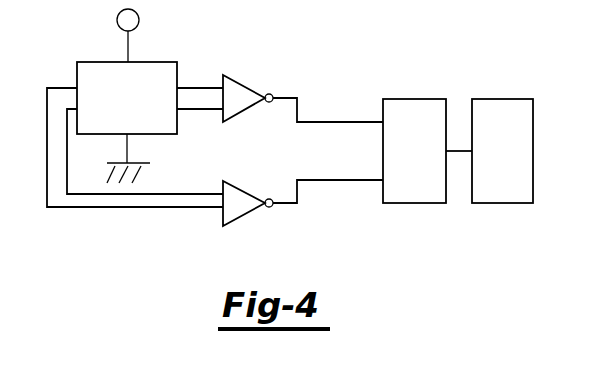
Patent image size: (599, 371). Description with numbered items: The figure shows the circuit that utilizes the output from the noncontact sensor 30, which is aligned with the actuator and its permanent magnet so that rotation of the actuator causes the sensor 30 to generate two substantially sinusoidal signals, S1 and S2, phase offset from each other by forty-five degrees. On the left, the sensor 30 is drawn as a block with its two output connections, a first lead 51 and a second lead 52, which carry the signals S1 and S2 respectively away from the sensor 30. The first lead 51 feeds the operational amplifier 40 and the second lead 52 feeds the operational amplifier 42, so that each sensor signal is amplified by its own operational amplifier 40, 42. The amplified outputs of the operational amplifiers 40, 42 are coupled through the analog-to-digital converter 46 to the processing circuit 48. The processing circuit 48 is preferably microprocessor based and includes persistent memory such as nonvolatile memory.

The noncontact sensor 30 is at (96, 62).
The first lead 51 is at (200, 88).
The second lead 52 is at (117, 207).
The operational amplifier 40 is at (240, 78).
The operational amplifier 42 is at (240, 217).
The analog-to-digital converter 46 is at (414, 99).
The processing circuit 48 is at (500, 99).